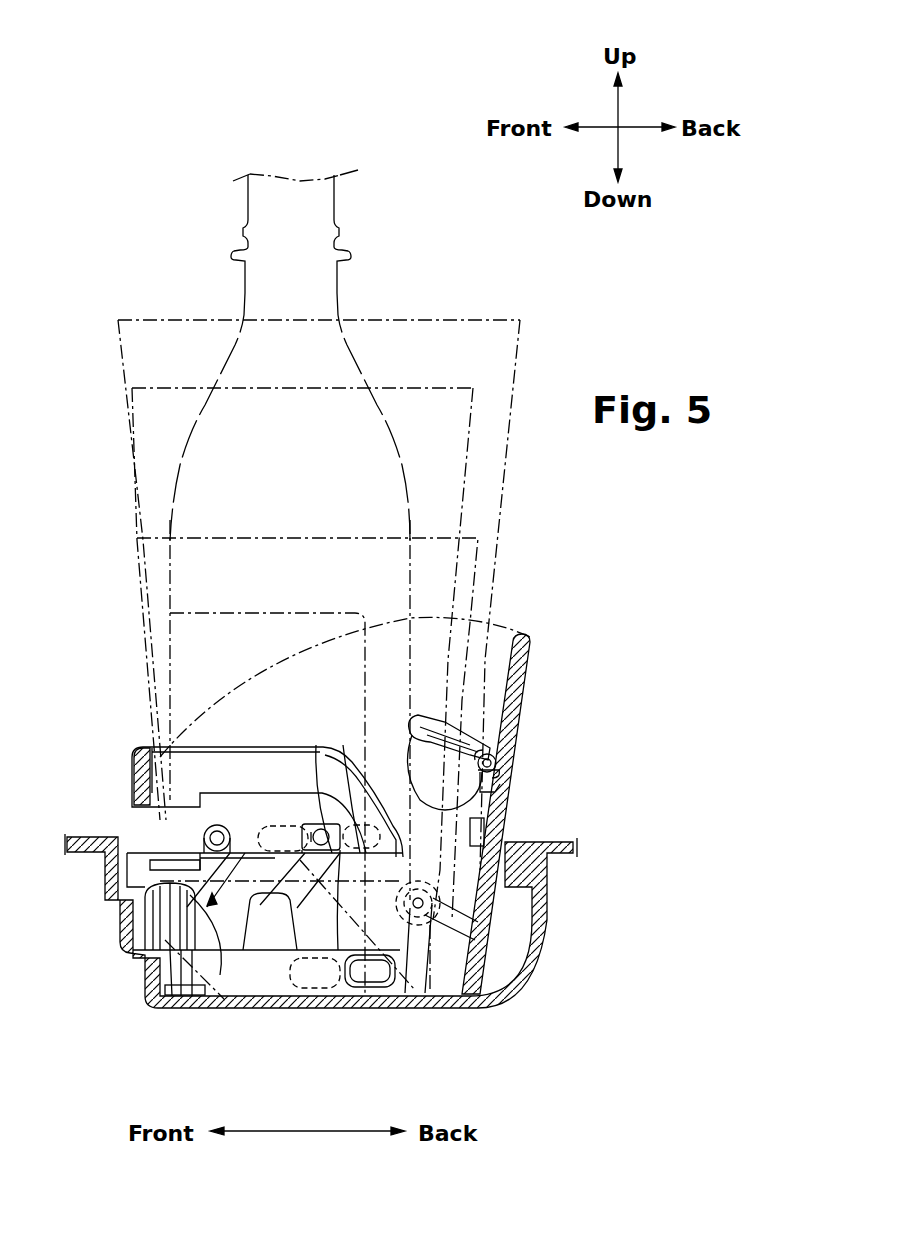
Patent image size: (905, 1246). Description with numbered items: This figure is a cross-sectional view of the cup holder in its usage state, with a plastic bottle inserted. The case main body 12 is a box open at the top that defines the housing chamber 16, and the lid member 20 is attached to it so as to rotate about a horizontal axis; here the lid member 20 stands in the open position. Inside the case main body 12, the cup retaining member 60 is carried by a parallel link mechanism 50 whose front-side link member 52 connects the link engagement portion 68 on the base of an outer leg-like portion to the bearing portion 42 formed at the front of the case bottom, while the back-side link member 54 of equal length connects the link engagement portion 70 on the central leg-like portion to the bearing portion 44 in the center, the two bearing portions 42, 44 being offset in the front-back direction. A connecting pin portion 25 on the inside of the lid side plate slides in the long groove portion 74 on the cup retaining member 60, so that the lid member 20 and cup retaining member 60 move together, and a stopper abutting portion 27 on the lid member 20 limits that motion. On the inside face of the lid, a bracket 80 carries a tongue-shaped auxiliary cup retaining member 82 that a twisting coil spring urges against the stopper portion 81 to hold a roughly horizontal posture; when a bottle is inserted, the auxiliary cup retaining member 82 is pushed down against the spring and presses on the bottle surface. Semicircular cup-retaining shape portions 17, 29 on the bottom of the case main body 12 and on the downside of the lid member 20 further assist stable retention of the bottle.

The case main body 12 is at (540, 903).
The housing chamber 16 is at (275, 975).
The cup-retaining shape portion 17 is at (200, 990).
The lid member 20 is at (520, 690).
The connecting pin portion 25 is at (359, 826).
The stopper abutting portion 27 is at (440, 898).
The cup-retaining shape portion 29 is at (445, 968).
The bearing portion 42 is at (148, 933).
The bearing portion 44 is at (260, 940).
The parallel link mechanism 50 is at (173, 1003).
The front-side link member 52 is at (187, 870).
The back-side link member 54 is at (343, 985).
The cup retaining member 60 is at (270, 777).
The link engagement portion 68 is at (206, 826).
The link engagement portion 70 is at (318, 824).
The long groove portion 74 is at (278, 830).
The bracket 80 is at (508, 787).
The stopper portion 81 is at (513, 742).
The auxiliary cup retaining member 82 is at (475, 740).